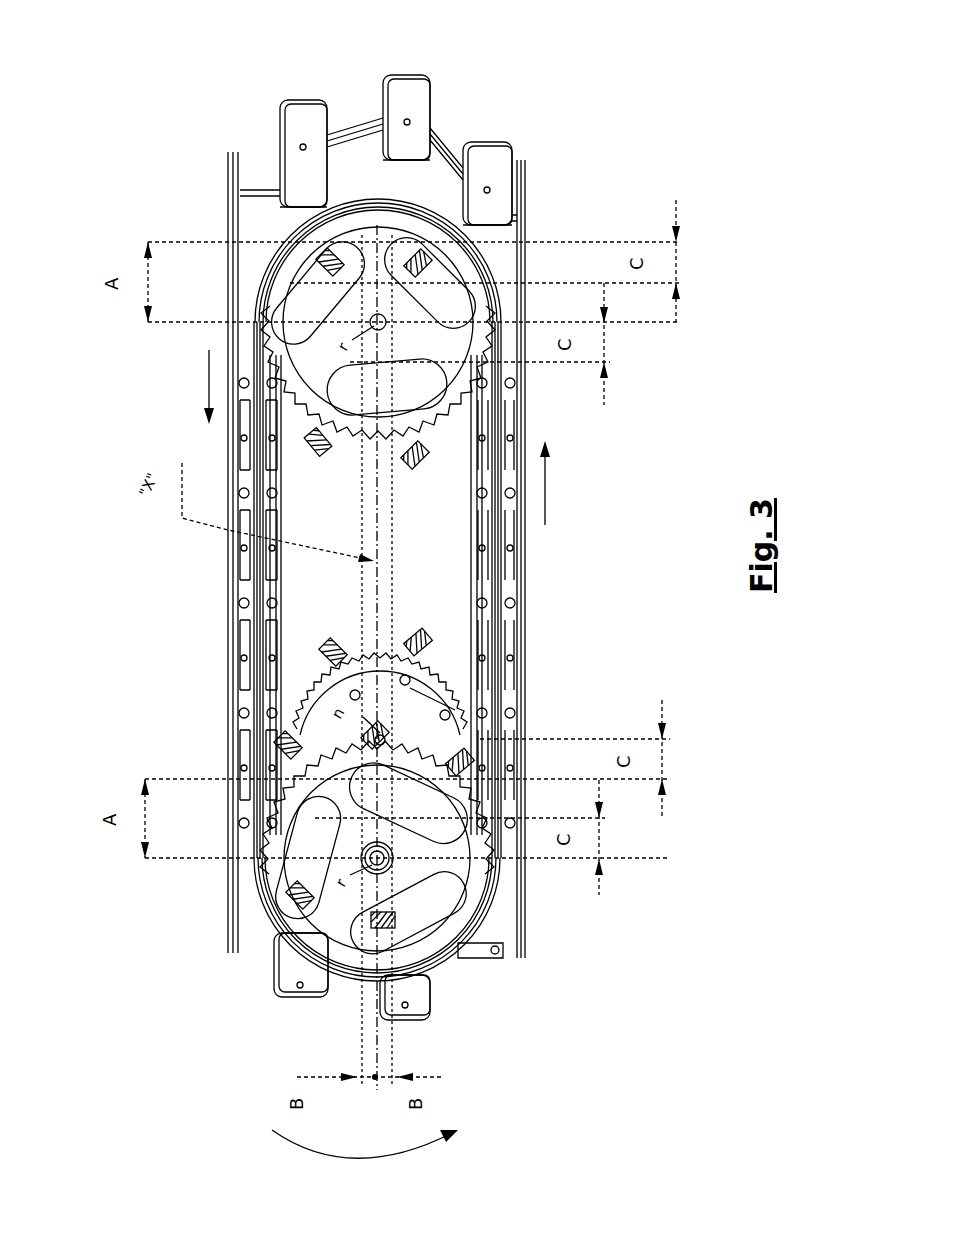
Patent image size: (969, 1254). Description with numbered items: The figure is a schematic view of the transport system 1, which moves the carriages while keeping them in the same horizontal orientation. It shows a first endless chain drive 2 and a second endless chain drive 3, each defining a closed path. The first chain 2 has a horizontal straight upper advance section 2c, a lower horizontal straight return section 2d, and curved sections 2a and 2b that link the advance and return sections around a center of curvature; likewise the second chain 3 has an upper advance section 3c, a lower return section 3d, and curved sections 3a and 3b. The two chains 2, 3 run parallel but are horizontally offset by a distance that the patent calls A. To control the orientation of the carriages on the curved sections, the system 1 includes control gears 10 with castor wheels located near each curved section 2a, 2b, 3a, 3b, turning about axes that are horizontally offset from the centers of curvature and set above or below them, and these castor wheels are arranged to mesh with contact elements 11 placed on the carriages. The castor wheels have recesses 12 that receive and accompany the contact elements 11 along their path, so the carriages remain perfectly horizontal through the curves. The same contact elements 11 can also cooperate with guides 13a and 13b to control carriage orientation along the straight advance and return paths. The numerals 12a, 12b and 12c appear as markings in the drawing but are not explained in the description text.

The transport system 1 is at (125, 1040).
The first endless chain drive 2 is at (363, 197).
The curved section of first chain 2a is at (348, 973).
The curved section of first chain 2b is at (433, 207).
The upper advance section of first chain 2c is at (257, 625).
The lower return section of first chain 2d is at (497, 605).
The second endless chain drive 3 is at (358, 135).
The curved section of second chain 3a is at (430, 880).
The curved section of second chain 3b is at (372, 113).
The upper advance section of second chain 3c is at (257, 653).
The lower return section of second chain 3d is at (505, 625).
The control gear 10 is at (432, 447).
The contact element 11 is at (313, 267).
The recess 12 is at (418, 635).
The lower sprocket cutout 12a is at (377, 851).
The upper sprocket cutout 12b is at (378, 333).
The cam wheel bolt 12c is at (431, 693).
The guide 13a is at (228, 722).
The guide 13b is at (528, 700).